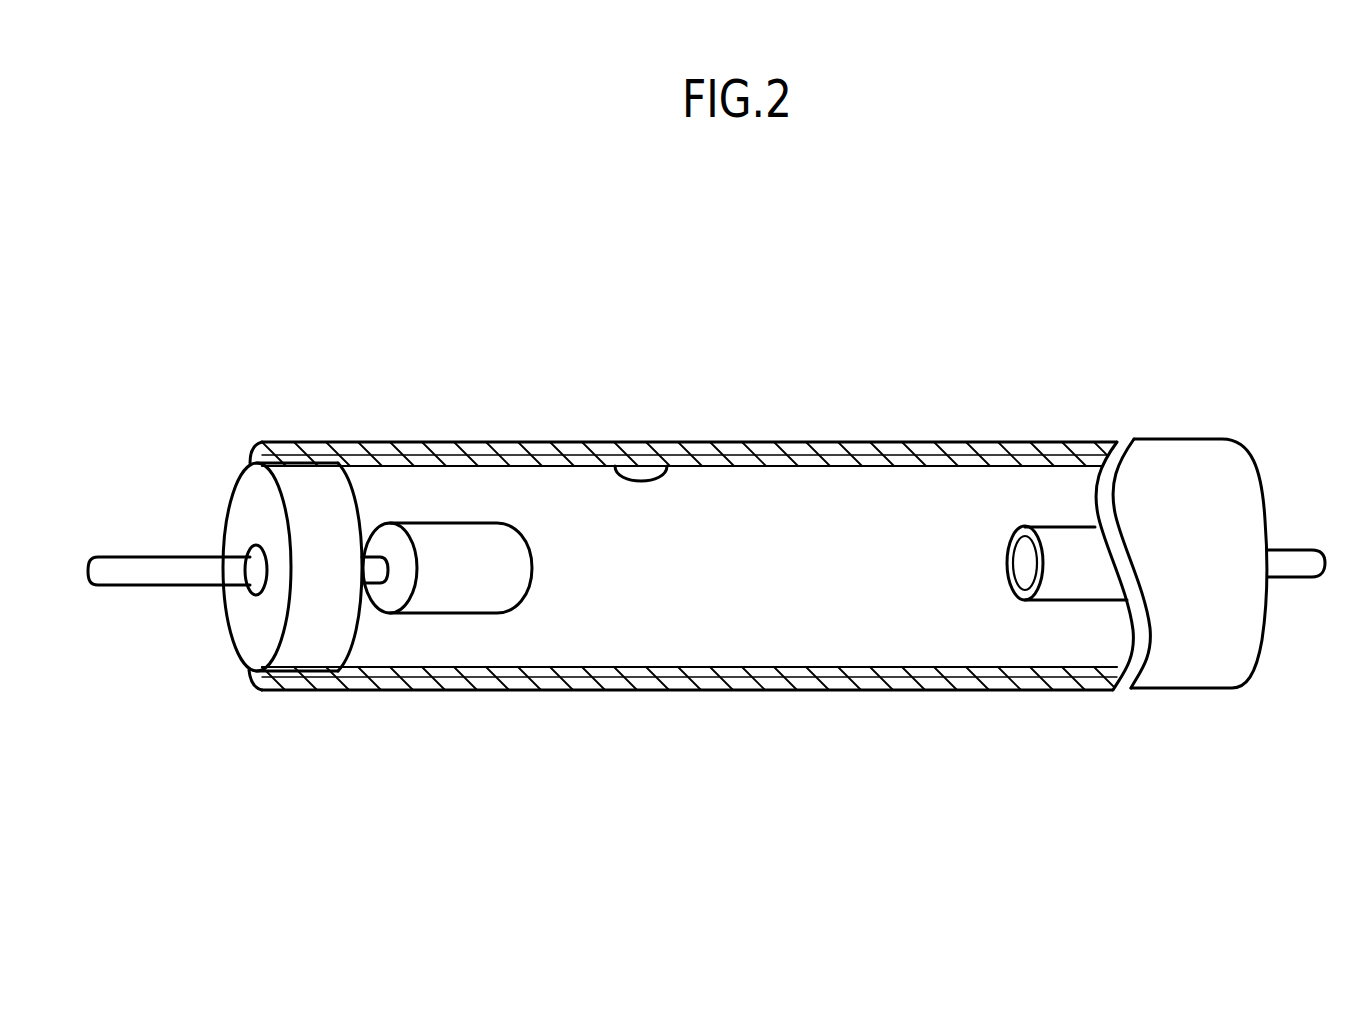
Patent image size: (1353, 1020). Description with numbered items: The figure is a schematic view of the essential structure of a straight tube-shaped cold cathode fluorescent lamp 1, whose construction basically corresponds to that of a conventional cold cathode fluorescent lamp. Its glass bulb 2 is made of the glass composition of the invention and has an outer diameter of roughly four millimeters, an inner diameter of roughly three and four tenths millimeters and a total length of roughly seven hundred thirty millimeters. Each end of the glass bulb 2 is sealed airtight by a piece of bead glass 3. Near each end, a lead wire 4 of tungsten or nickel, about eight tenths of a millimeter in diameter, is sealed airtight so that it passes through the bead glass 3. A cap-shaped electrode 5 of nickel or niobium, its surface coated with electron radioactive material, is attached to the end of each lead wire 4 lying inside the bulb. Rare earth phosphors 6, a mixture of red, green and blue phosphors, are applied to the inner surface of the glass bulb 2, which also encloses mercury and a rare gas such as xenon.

The cold cathode fluorescent lamp 1 is at (706, 560).
The glass bulb 2 is at (923, 447).
The bead glass 3 is at (247, 488).
The lead wire 4 is at (134, 567).
The electrode 5 is at (440, 550).
The rare earth phosphors 6 is at (653, 667).